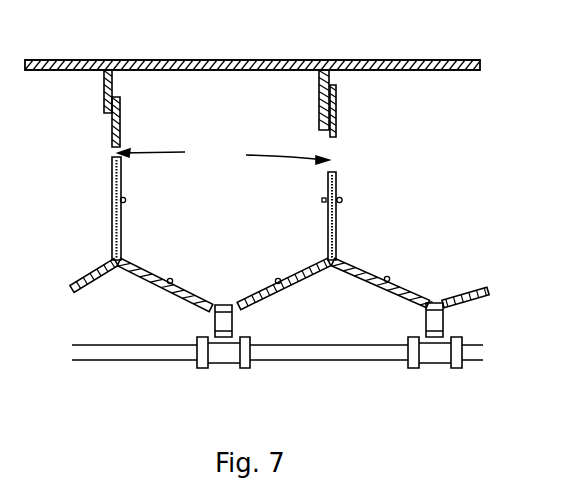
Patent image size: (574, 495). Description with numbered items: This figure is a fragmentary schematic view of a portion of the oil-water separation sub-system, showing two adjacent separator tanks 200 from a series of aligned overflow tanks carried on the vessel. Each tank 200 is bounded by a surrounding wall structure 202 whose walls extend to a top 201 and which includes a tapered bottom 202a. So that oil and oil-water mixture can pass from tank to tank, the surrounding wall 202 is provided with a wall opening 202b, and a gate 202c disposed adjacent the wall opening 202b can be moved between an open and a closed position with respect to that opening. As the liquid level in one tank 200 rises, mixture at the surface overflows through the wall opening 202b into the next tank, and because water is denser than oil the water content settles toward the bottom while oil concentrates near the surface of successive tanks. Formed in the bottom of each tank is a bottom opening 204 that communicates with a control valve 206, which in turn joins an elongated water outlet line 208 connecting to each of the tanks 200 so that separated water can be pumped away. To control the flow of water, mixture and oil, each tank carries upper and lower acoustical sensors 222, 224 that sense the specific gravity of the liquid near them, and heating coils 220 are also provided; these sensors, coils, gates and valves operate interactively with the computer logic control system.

The tank 200 is at (72, 100).
The top 201 is at (255, 60).
The surrounding wall structure 202 is at (111, 212).
The tapered bottom 202a is at (185, 298).
The wall opening 202b is at (223, 154).
The gate 202c is at (122, 116).
The bottom opening 204 is at (214, 306).
The control valve 206 is at (226, 320).
The water outlet line 208 is at (113, 352).
The heating coils 220 is at (118, 189).
The upper acoustical sensor 222 is at (124, 203).
The lower acoustical sensor 224 is at (172, 279).